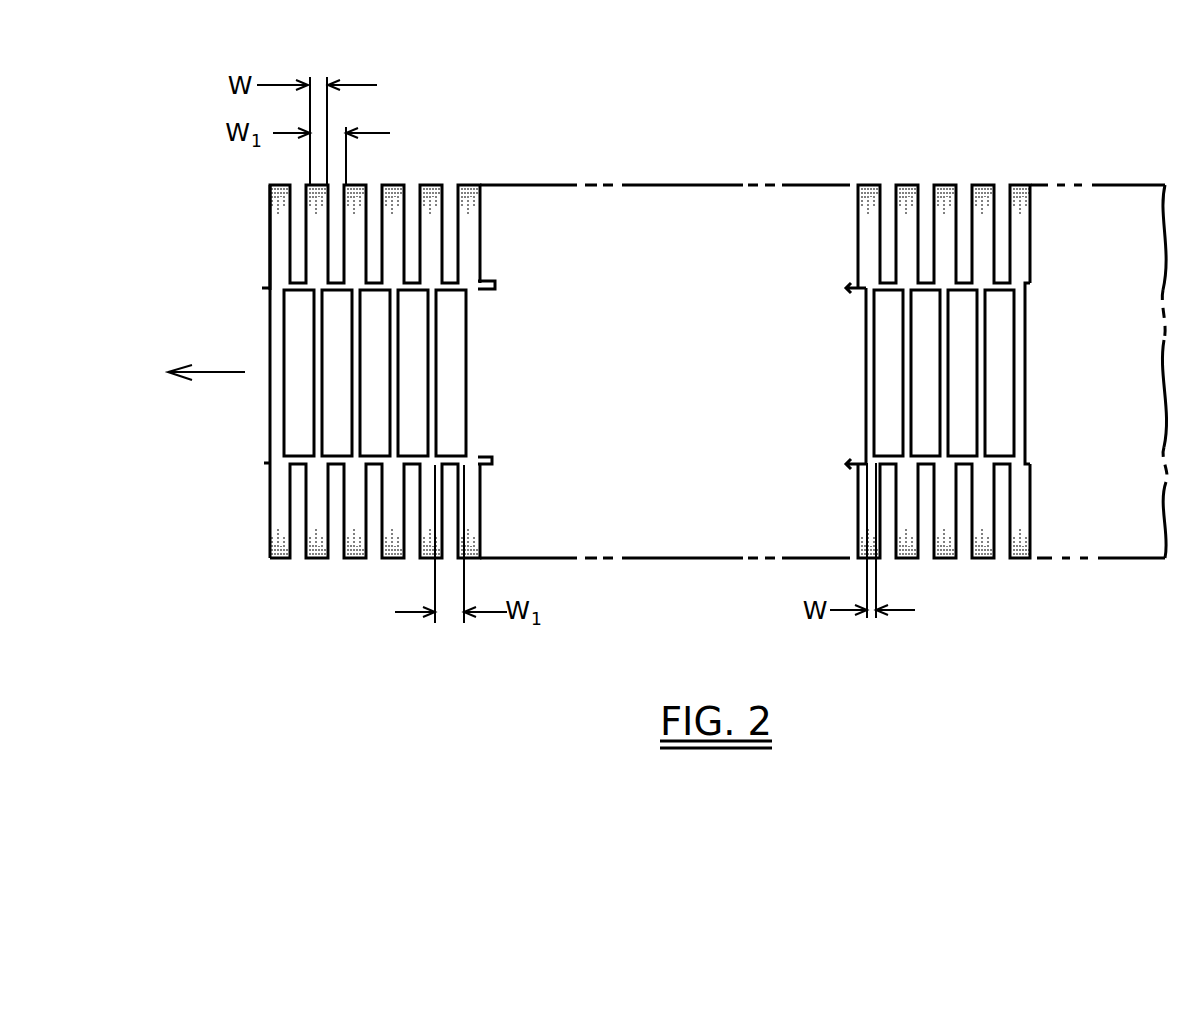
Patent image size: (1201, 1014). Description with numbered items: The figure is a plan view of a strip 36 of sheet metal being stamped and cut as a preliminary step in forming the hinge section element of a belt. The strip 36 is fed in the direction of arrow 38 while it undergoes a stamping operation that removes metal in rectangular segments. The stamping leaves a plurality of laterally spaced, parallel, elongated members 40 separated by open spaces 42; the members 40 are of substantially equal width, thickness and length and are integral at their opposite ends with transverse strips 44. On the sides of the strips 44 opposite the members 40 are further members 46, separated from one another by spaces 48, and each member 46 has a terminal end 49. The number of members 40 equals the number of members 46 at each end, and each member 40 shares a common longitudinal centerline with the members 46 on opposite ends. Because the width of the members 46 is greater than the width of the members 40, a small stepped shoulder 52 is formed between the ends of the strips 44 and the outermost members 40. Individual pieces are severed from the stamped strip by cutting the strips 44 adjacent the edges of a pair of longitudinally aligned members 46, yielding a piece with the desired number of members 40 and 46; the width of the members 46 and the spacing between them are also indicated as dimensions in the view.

The strip 36 is at (1099, 562).
The arrow 38 is at (223, 373).
The elongated members 40 is at (468, 347).
The open spaces 42 is at (956, 369).
The transverse strips 44 is at (1003, 287).
The members 46 is at (313, 532).
The spaces 48 is at (386, 178).
The terminal end 49 is at (1010, 186).
The stepped shoulder 52 is at (270, 290).